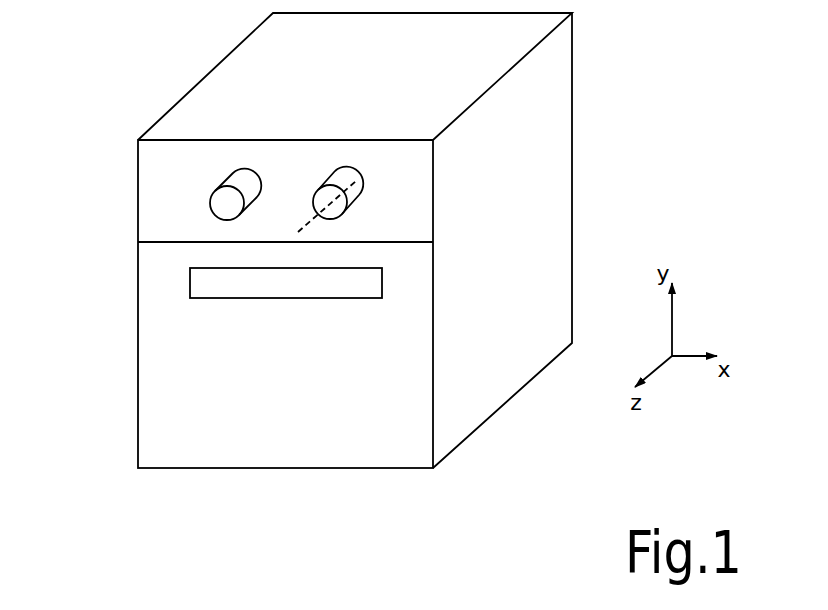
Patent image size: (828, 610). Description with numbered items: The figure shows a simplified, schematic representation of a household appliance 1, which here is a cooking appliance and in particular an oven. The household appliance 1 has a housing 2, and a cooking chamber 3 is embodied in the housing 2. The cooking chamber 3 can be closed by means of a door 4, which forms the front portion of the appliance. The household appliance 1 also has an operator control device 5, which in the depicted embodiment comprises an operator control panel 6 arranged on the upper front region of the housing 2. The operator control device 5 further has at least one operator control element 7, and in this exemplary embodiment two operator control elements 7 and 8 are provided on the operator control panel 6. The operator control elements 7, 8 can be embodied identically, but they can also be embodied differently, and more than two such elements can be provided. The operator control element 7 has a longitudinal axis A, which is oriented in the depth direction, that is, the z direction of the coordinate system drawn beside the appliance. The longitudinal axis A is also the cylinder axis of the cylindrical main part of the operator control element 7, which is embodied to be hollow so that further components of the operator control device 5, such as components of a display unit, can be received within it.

The household appliance 1 is at (582, 100).
The housing 2 is at (558, 162).
The cooking chamber 3 is at (397, 343).
The door 4 is at (155, 389).
The operator control device 5 is at (290, 168).
The operator control panel 6 is at (312, 165).
The operator control element 7 is at (362, 162).
The operator control element 8 is at (230, 167).
The longitudinal axis A is at (373, 163).